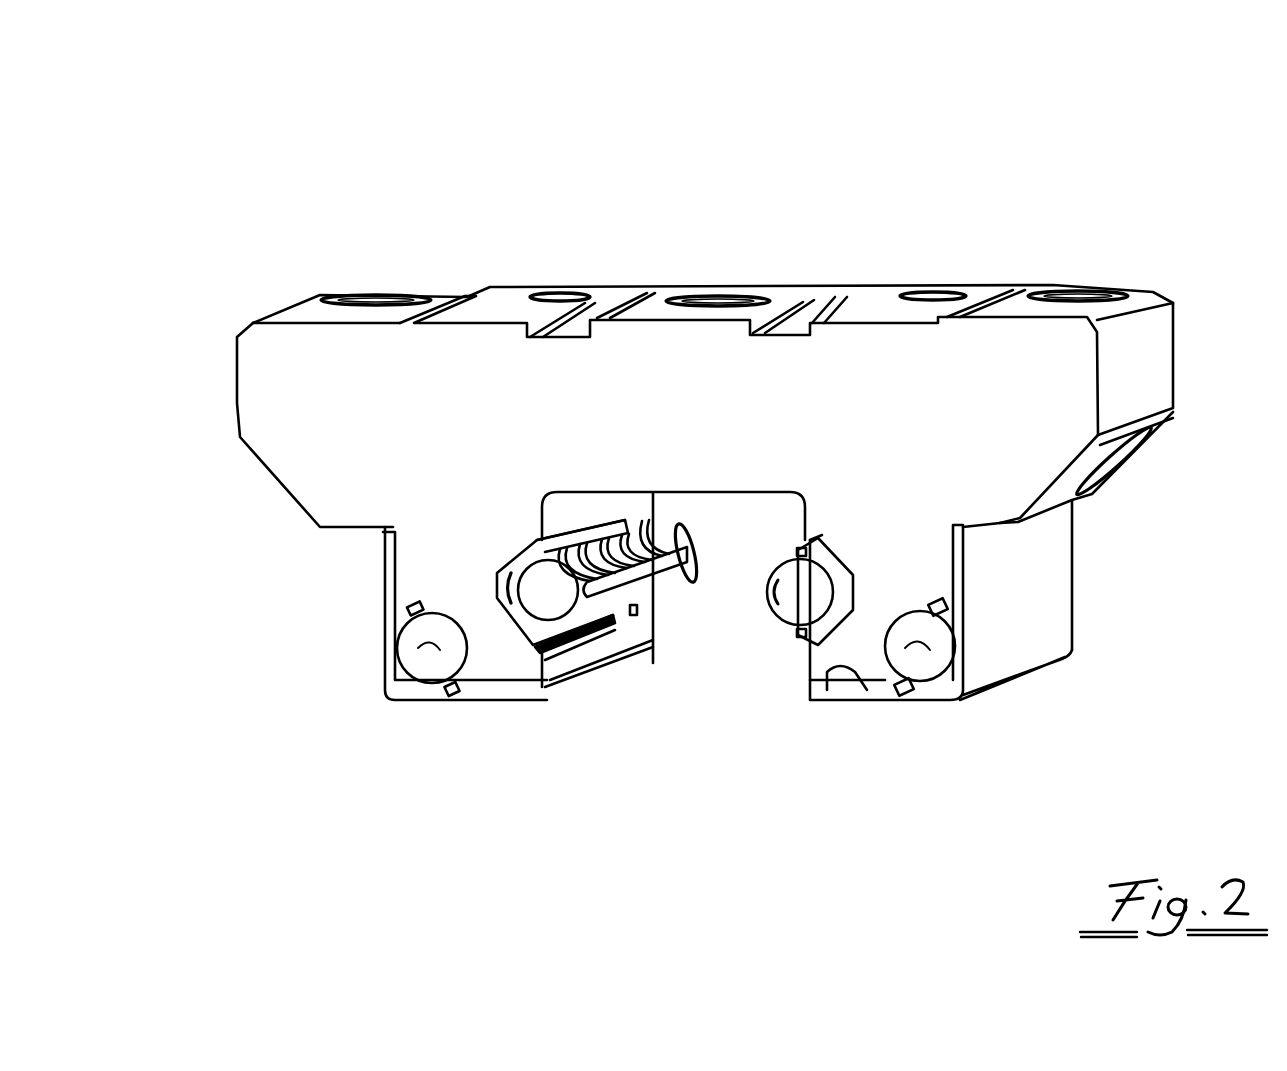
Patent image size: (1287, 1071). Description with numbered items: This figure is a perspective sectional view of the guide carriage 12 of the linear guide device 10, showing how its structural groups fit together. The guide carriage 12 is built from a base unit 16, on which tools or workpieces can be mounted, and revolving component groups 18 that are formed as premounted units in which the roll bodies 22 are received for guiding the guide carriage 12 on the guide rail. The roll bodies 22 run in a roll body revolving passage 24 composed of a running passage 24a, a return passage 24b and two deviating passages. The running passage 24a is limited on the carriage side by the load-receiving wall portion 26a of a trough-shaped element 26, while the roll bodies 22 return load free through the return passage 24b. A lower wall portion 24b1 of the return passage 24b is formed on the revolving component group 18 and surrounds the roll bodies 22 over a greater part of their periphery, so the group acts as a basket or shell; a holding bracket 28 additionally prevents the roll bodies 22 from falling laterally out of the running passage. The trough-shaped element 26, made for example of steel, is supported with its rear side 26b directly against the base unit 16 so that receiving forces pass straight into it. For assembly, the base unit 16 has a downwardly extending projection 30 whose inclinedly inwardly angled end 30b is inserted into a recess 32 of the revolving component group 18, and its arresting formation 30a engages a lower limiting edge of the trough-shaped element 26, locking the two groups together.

The linear guide device 10 is at (188, 164).
The guide carriage 12 is at (1185, 219).
The base unit 16 is at (257, 347).
The revolving component group 18 is at (405, 695).
The roll bodies 22 is at (925, 645).
The roll body revolving passage 24 is at (430, 624).
The running passage 24a is at (790, 605).
The return passage 24b is at (935, 667).
The lower wall portion of the return passage 24b1 is at (392, 670).
The trough-shaped element 26 is at (815, 560).
The load-receiving wall portion 26a is at (820, 563).
The rear side of the trough-shaped element 26b is at (513, 560).
The holding bracket 28 is at (655, 590).
The projection 30 is at (818, 690).
The arresting formation 30a is at (583, 662).
The inclinedly inwardly angled end 30b is at (490, 655).
The recess 32 is at (835, 680).